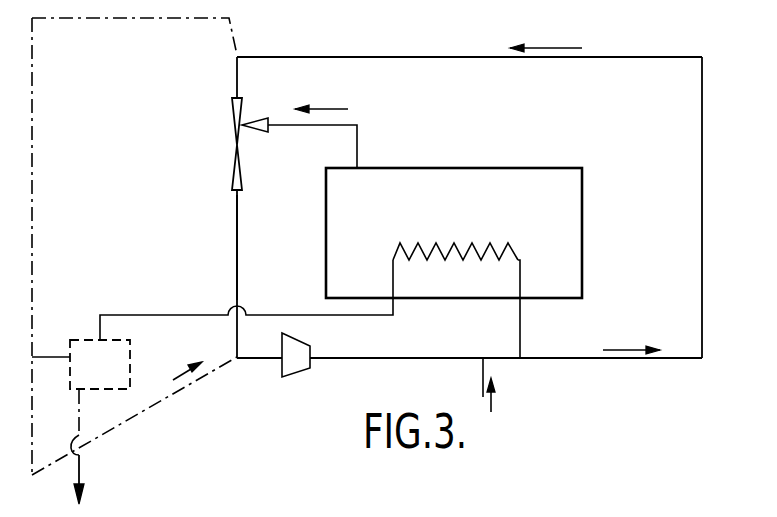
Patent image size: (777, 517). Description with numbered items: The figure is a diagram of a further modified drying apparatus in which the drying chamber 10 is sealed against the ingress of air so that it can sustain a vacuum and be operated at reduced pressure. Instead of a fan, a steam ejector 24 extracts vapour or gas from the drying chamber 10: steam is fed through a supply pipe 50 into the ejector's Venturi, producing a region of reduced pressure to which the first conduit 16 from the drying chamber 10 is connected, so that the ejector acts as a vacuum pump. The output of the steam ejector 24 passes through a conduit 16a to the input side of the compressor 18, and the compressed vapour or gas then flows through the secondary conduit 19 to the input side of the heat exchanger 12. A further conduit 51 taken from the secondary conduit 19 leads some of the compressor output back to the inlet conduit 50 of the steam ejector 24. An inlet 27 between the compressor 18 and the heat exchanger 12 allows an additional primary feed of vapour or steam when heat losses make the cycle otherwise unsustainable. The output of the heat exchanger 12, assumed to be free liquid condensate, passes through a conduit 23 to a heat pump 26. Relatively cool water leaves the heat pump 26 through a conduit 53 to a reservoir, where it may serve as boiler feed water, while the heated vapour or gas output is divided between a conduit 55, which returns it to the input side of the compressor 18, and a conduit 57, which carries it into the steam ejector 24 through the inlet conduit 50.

The drying chamber 10 is at (582, 210).
The heat exchanger 12 is at (470, 246).
The first conduit 16 is at (358, 142).
The conduit 16a is at (237, 248).
The compressor 18 is at (303, 375).
The secondary conduit 19 is at (520, 330).
The conduit 23 is at (276, 314).
The steam ejector 24 is at (240, 147).
The heat pump 26 is at (130, 355).
The inlet 27 is at (483, 388).
The supply pipe 50 is at (237, 72).
The further conduit 51 is at (702, 228).
The conduit 53 is at (80, 468).
The conduit 55 is at (130, 415).
The conduit 57 is at (32, 190).